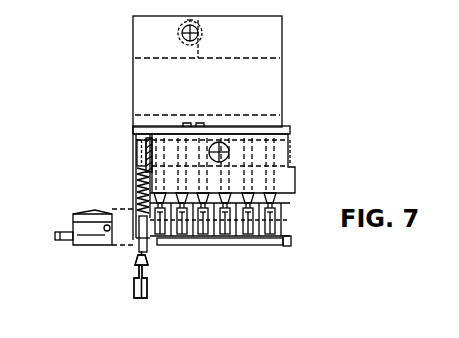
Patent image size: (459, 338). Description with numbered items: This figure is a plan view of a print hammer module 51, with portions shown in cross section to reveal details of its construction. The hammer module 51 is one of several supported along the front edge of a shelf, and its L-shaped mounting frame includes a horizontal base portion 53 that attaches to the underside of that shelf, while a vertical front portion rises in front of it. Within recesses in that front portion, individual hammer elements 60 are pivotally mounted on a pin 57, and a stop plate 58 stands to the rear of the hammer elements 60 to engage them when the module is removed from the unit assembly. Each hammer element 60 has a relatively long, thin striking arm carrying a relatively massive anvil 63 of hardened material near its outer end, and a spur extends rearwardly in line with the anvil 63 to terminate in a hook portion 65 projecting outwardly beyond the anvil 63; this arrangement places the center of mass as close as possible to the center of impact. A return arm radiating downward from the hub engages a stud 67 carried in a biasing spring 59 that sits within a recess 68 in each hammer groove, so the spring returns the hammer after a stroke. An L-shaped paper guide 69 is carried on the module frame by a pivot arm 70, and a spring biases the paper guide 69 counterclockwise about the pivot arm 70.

The hammer module 51 is at (185, 71).
The horizontal base portion 53 is at (262, 93).
The pin 57 is at (90, 218).
The stop plate 58 is at (291, 173).
The biasing spring 59 is at (140, 152).
The hammer element 60 is at (150, 285).
The anvil 63 is at (272, 221).
The hook portion 65 is at (277, 203).
The stud 67 is at (146, 252).
The recess 68 is at (139, 180).
The paper guide 69 is at (283, 246).
The pivot arm 70 is at (62, 241).